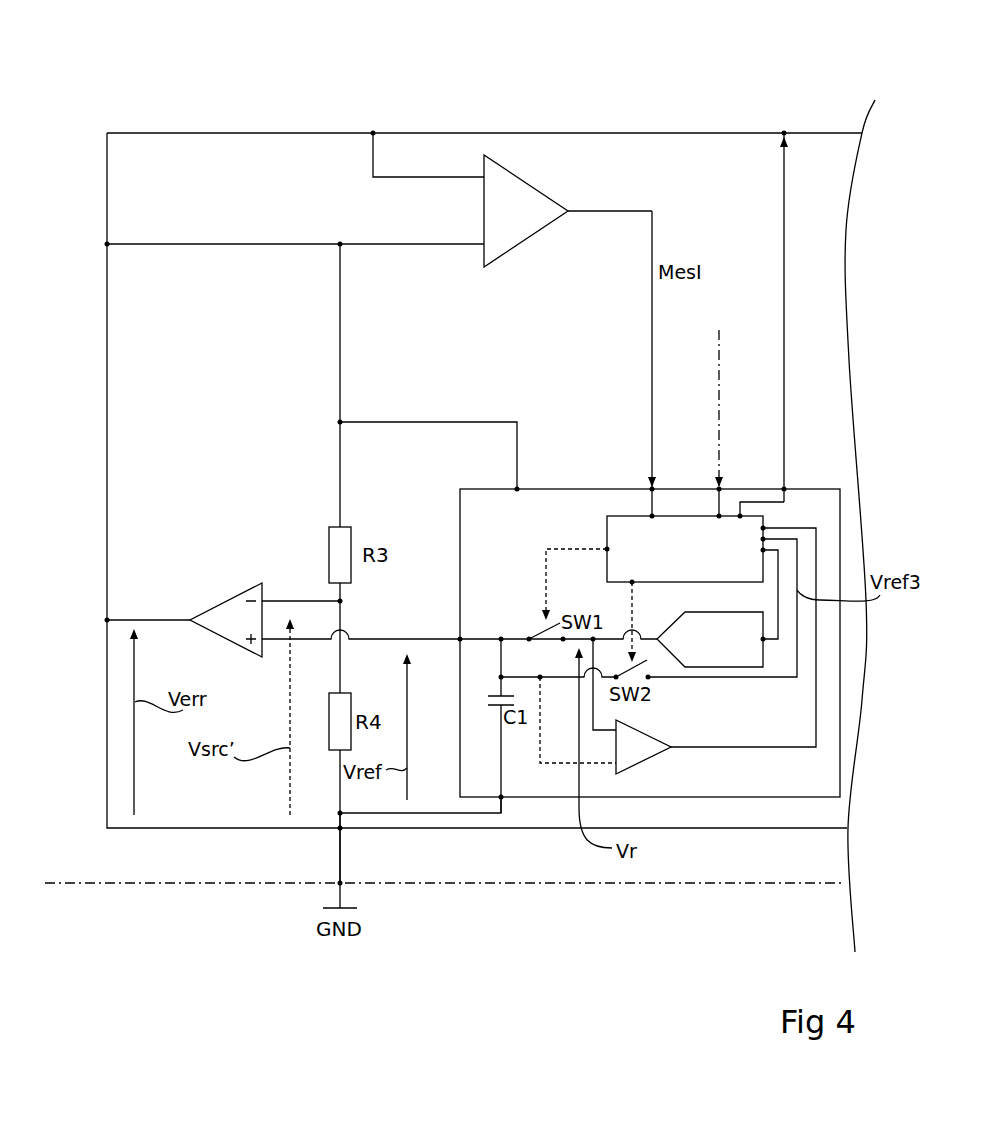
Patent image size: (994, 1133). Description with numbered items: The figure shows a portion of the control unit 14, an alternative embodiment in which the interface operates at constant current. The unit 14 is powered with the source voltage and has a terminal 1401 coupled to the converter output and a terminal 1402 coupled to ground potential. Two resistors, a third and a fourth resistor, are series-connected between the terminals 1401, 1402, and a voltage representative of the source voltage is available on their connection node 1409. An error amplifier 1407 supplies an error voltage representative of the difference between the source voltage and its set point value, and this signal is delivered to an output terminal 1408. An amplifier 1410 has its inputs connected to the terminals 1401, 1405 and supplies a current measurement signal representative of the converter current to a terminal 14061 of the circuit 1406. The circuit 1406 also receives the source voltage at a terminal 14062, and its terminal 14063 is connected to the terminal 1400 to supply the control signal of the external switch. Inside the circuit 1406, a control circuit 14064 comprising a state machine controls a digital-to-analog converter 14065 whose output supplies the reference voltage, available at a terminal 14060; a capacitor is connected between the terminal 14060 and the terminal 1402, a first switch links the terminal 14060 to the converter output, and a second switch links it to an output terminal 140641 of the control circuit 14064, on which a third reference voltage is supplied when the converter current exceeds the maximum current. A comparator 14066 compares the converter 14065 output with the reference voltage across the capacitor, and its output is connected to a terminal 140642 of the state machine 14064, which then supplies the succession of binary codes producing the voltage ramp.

The control unit 14 is at (193, 65).
The terminal 1400 is at (784, 133).
The terminal 1401 is at (107, 244).
The terminal 1402 is at (340, 828).
The terminal 1405 is at (373, 133).
The circuit 1406 is at (447, 513).
The error amplifier 1407 is at (214, 597).
The output terminal 1408 is at (107, 620).
The node 1409 is at (340, 601).
The amplifier 1410 is at (517, 190).
The terminal 14060 is at (508, 613).
The terminal 14061 is at (656, 476).
The terminal 14062 is at (517, 489).
The terminal 14063 is at (784, 489).
The control circuit 14064 is at (619, 503).
The digital-to-analog converter 14065 is at (746, 612).
The comparator 14066 is at (643, 752).
The output terminal 140641 is at (763, 539).
The terminal 140642 is at (763, 528).